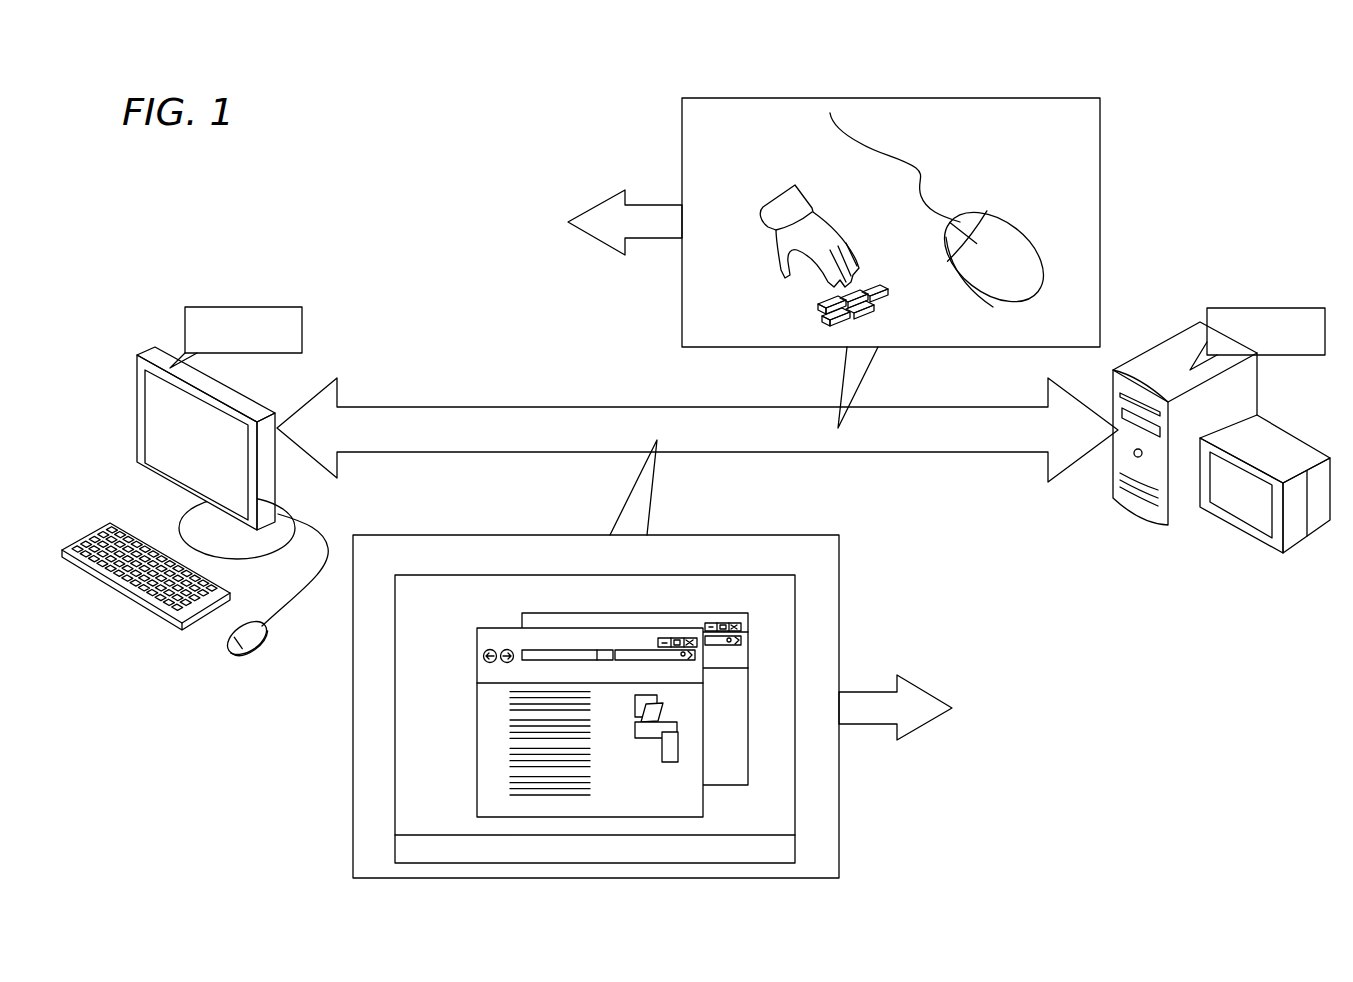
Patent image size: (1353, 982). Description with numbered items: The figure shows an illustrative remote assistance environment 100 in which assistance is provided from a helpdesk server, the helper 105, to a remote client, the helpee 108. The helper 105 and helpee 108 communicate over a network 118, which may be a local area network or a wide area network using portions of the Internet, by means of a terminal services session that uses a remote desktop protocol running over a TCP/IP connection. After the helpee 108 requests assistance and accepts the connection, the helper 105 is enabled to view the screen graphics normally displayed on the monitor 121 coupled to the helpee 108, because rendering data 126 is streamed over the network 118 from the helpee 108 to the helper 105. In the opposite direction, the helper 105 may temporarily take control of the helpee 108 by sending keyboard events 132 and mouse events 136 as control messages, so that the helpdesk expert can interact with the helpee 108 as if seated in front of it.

The remote assistance environment 100 is at (918, 43).
The helper 105 is at (1148, 345).
The helpee 108 is at (178, 502).
The network 118 is at (443, 407).
The monitor 121 is at (172, 422).
The rendering data 126 is at (839, 603).
The keyboard events 132 is at (786, 318).
The mouse events 136 is at (1039, 186).